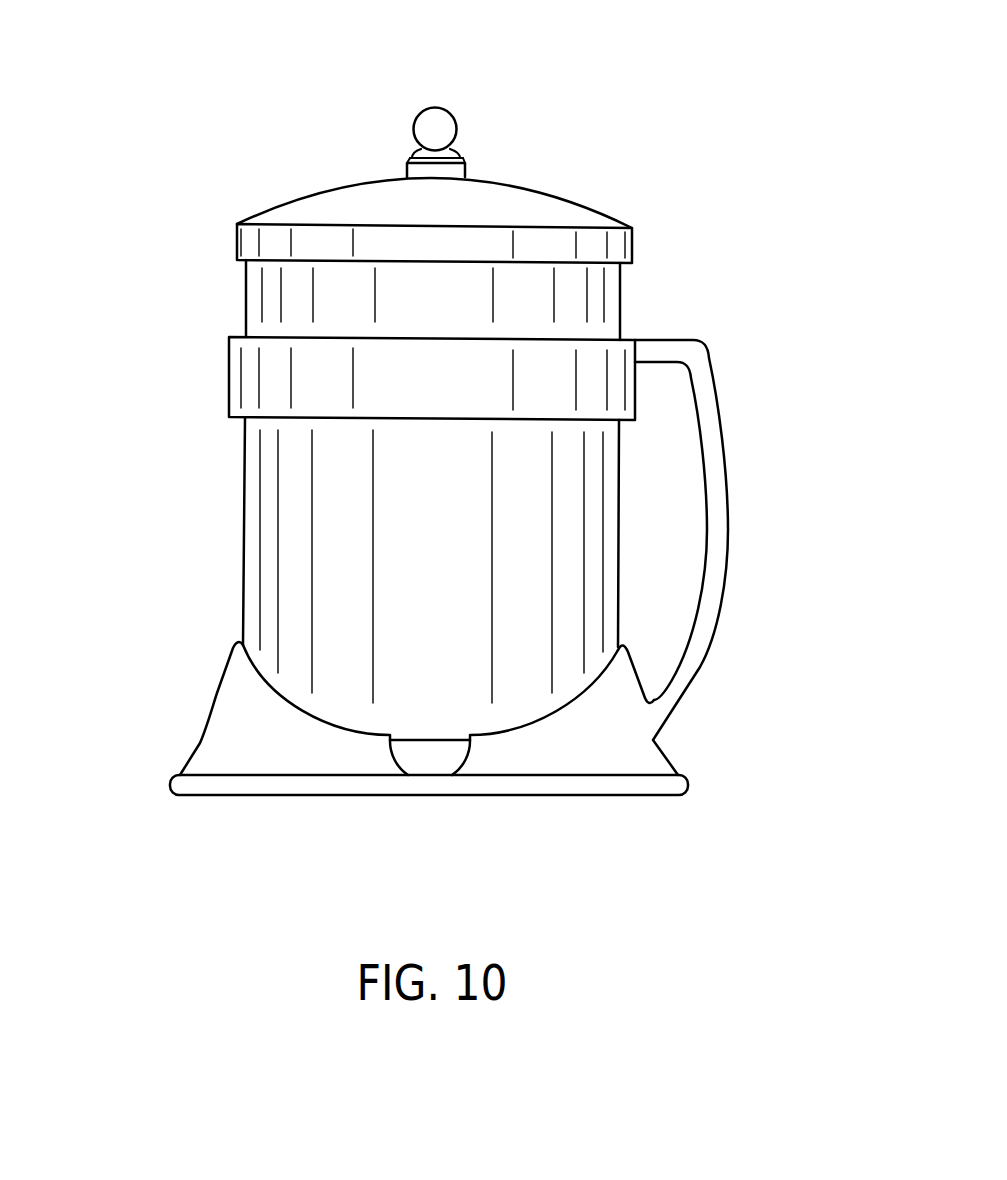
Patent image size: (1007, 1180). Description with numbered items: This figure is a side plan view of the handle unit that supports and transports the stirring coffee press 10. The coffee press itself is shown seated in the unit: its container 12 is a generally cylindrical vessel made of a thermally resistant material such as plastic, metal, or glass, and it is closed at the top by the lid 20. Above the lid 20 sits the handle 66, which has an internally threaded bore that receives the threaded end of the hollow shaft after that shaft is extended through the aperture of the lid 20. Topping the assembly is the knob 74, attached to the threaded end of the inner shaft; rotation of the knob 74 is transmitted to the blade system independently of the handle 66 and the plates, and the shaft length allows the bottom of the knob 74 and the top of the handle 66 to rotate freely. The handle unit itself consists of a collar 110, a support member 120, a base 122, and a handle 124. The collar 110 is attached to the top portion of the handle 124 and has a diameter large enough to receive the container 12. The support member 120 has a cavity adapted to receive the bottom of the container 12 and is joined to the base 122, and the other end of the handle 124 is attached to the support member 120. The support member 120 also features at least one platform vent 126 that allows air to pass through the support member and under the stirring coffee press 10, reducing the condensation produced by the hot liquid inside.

The stirring coffee press 10 is at (295, 535).
The container 12 is at (247, 298).
The lid 20 is at (540, 190).
The handle 66 is at (405, 160).
The knob 74 is at (432, 110).
The collar 110 is at (232, 378).
The support member 120 is at (215, 690).
The base 122 is at (270, 795).
The handle 124 is at (727, 528).
The platform vent 126 is at (428, 757).